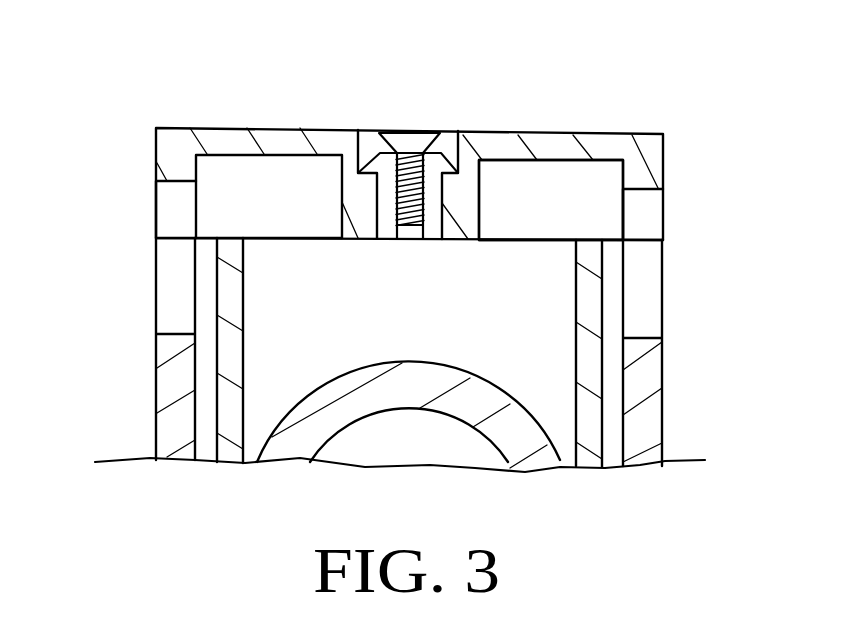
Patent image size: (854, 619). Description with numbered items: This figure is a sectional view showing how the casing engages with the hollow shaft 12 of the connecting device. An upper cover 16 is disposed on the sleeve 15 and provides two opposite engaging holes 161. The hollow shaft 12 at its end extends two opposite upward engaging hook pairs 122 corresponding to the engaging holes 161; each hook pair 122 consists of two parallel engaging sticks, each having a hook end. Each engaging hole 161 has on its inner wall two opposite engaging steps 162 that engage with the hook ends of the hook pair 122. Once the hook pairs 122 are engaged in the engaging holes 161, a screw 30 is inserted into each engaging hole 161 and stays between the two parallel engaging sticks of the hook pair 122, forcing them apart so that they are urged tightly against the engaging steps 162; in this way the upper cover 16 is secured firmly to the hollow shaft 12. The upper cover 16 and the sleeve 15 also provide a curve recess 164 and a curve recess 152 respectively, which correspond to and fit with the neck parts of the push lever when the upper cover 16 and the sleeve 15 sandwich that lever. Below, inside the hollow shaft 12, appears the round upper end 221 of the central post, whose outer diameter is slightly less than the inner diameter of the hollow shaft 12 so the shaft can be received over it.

The hollow shaft 12 is at (578, 305).
The sleeve 15 is at (655, 382).
The upper cover 16 is at (270, 133).
The screw 30 is at (413, 135).
The engaging hook pair 122 is at (372, 160).
The curve recess 152 is at (162, 290).
The engaging hole 161 is at (450, 140).
The engaging step 162 is at (479, 210).
The curve recess 164 is at (165, 207).
The round upper end 221 is at (368, 375).